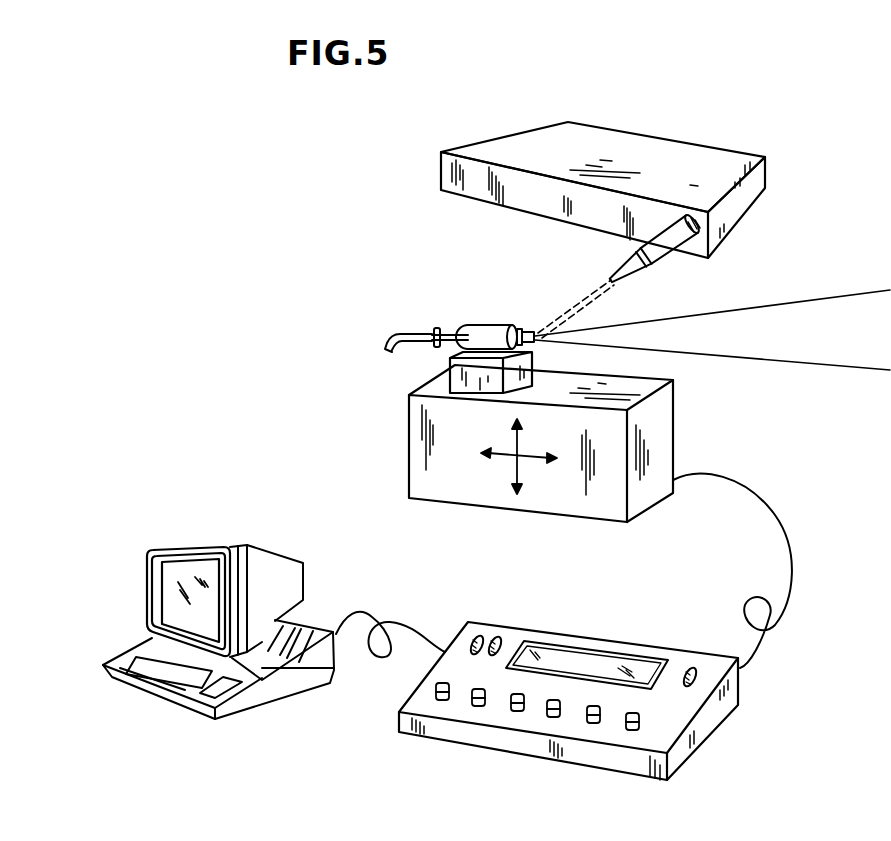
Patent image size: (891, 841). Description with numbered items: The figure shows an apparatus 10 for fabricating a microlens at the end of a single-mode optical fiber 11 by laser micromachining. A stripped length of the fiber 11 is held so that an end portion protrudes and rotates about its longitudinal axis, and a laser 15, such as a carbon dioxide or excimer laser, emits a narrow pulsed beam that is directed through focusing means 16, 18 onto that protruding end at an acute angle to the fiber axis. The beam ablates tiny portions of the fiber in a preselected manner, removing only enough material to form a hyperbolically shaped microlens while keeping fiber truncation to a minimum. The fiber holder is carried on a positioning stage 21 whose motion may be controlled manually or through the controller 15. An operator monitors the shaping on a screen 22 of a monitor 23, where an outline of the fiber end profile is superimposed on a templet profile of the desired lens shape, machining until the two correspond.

The apparatus 10 is at (338, 128).
The single-mode optical fiber 11 is at (413, 333).
The laser 15 is at (712, 132).
The focusing means 16 is at (643, 137).
The focusing means 18 is at (743, 193).
The positioning stage 21 is at (372, 540).
The screen 22 is at (187, 583).
The monitor 23 is at (262, 577).